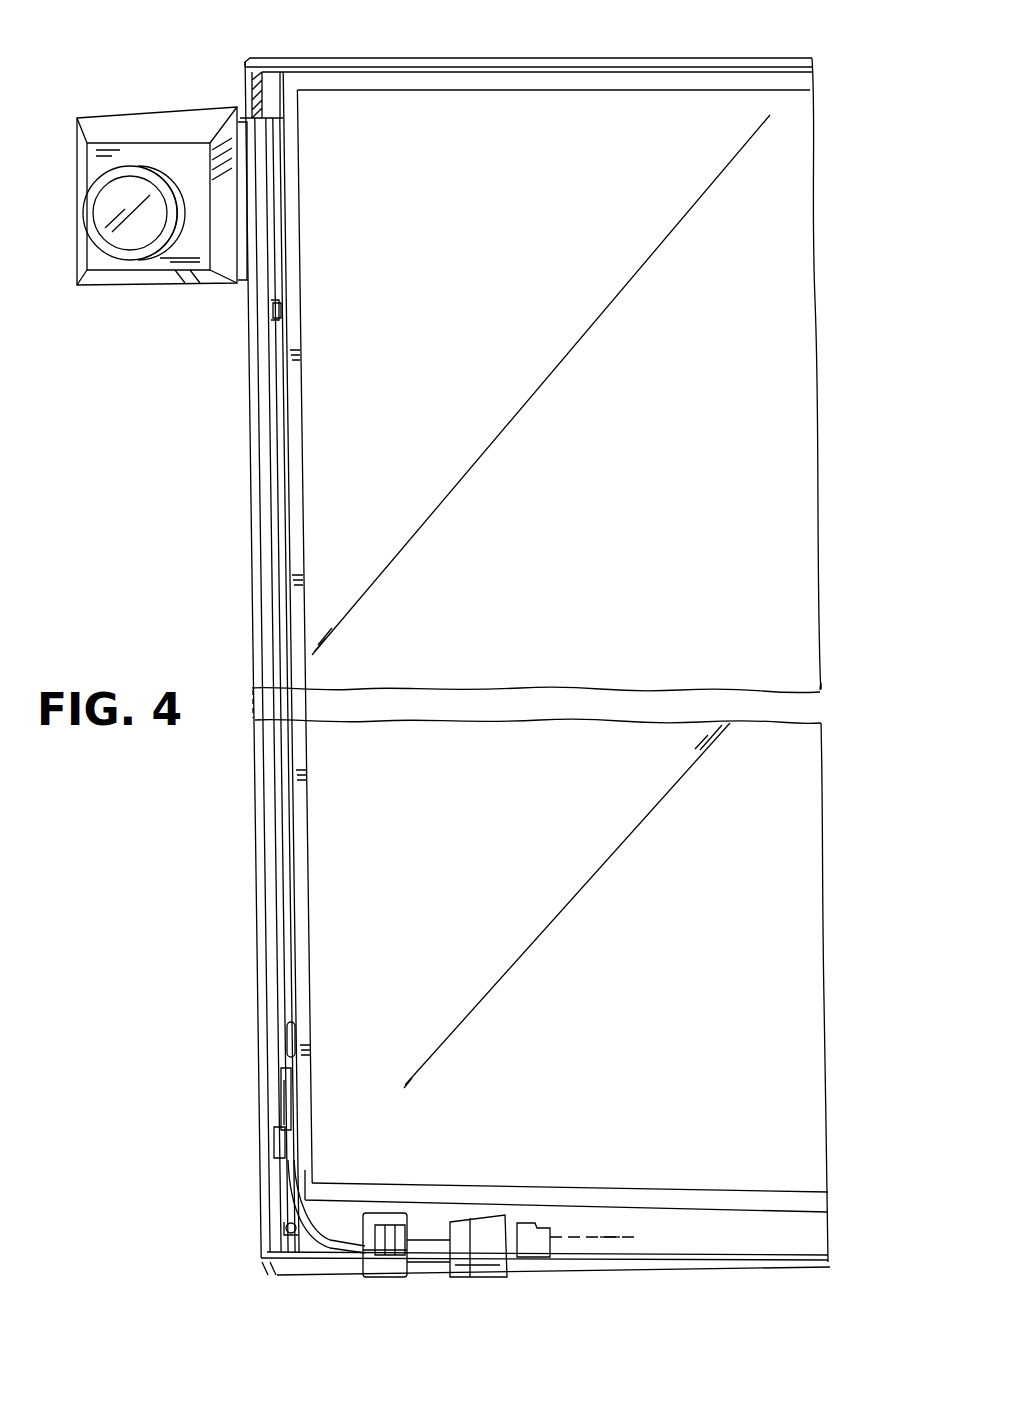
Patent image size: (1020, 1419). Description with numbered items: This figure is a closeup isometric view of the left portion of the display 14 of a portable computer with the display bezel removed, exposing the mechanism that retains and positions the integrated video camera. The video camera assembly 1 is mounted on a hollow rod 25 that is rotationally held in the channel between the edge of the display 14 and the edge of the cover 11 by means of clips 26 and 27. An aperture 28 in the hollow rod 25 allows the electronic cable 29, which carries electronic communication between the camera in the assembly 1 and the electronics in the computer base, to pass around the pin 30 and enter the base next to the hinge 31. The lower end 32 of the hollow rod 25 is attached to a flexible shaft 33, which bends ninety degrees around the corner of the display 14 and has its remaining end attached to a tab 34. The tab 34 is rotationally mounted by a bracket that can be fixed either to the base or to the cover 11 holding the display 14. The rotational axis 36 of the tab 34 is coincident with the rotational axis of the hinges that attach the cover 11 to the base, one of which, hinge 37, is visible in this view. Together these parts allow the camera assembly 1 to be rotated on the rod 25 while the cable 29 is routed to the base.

The video camera assembly 1 is at (116, 302).
The cover 11 is at (449, 58).
The display 14 is at (573, 105).
The hollow rod 25 is at (268, 563).
The clip 26 is at (275, 308).
The clip 27 is at (294, 1030).
The aperture 28 is at (291, 1110).
The electronic cable 29 is at (443, 1240).
The pin 30 is at (286, 1225).
The hinge 31 is at (567, 1190).
The lower end 32 is at (291, 1158).
The flexible shaft 33 is at (323, 1223).
The tab 34 is at (383, 1230).
The rotational axis 36 is at (620, 1237).
The hinge 37 is at (514, 1225).